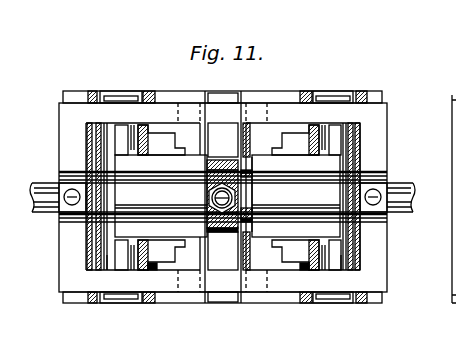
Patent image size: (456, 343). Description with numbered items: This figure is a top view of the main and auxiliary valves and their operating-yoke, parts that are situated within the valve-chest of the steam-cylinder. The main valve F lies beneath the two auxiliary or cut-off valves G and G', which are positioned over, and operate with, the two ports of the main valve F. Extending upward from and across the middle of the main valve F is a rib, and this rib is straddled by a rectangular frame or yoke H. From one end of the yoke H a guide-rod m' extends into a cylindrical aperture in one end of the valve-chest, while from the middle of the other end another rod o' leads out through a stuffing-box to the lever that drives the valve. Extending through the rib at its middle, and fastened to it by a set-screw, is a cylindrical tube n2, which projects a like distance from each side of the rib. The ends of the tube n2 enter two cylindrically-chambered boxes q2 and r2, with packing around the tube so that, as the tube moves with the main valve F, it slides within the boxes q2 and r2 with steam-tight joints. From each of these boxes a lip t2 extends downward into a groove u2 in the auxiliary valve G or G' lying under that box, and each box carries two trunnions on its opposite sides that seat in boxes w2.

The yoke H is at (223, 197).
The rod o' is at (44, 197).
The guide-rod m' is at (401, 197).
The auxiliary valve G is at (223, 196).
The auxiliary valve G' is at (362, 203).
The lip t2 is at (228, 197).
The box w2 is at (228, 197).
The central column i' is at (223, 197).
The cylindrical tube n2 is at (246, 194).
The cylindrically-chambered box r2 is at (161, 196).
The cylindrically-chambered box q2 is at (296, 196).
The main valve F is at (253, 196).
The groove u2 is at (115, 258).